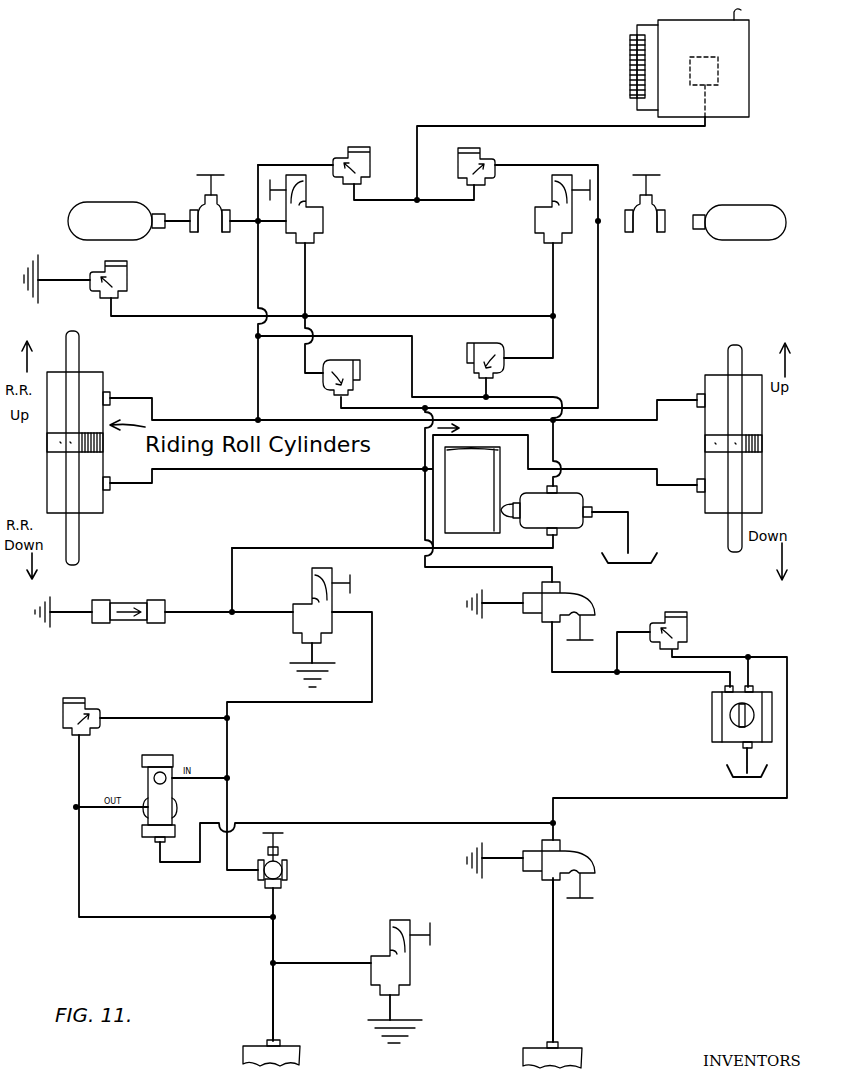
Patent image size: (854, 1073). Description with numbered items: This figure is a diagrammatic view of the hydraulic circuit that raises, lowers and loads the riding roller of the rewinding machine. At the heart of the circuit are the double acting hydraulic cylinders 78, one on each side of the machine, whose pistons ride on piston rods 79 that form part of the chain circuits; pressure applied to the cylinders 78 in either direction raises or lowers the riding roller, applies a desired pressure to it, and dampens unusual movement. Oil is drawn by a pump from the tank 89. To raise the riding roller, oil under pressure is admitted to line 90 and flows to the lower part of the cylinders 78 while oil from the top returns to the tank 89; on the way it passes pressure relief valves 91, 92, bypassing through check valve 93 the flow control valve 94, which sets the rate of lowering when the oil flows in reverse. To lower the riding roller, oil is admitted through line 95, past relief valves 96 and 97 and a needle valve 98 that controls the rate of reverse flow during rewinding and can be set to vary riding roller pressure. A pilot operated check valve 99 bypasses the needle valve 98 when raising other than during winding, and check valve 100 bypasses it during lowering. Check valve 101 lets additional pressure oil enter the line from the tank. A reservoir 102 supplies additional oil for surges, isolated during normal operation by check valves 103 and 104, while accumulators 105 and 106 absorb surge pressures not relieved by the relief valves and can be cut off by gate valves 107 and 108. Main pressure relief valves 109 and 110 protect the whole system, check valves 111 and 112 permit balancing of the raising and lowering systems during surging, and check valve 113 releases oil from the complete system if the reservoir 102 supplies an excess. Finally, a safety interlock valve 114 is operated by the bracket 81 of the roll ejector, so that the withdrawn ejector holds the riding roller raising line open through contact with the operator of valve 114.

The double acting hydraulic cylinders 78 is at (710, 380).
The piston rods 79 is at (760, 323).
The brackets 81 is at (455, 483).
The tank 89 is at (605, 1025).
The line 90 is at (555, 938).
The pressure relief valve 91 is at (593, 855).
The pressure relief valve 92 is at (595, 600).
The check valve 93 is at (688, 620).
The flow control valve 94 is at (711, 725).
The line 95 is at (276, 988).
The relief valve 96 is at (383, 930).
The relief valve 97 is at (303, 612).
The needle valve 98 is at (287, 870).
The pilot operated check valve 99 is at (147, 815).
The check valve 100 is at (92, 682).
The check valve 101 is at (135, 597).
The reservoir 102 is at (735, 47).
The check valve 103 is at (480, 152).
The check valve 104 is at (352, 147).
The accumulator 105 is at (750, 210).
The accumulator 106 is at (122, 186).
The gate valve 107 is at (657, 200).
The gate valve 108 is at (208, 228).
The main pressure relief valve 109 is at (535, 222).
The main pressure relief valve 110 is at (322, 215).
The check valve 111 is at (492, 345).
The check valve 112 is at (352, 378).
The check valve 113 is at (118, 290).
The safety interlock valve 114 is at (583, 497).